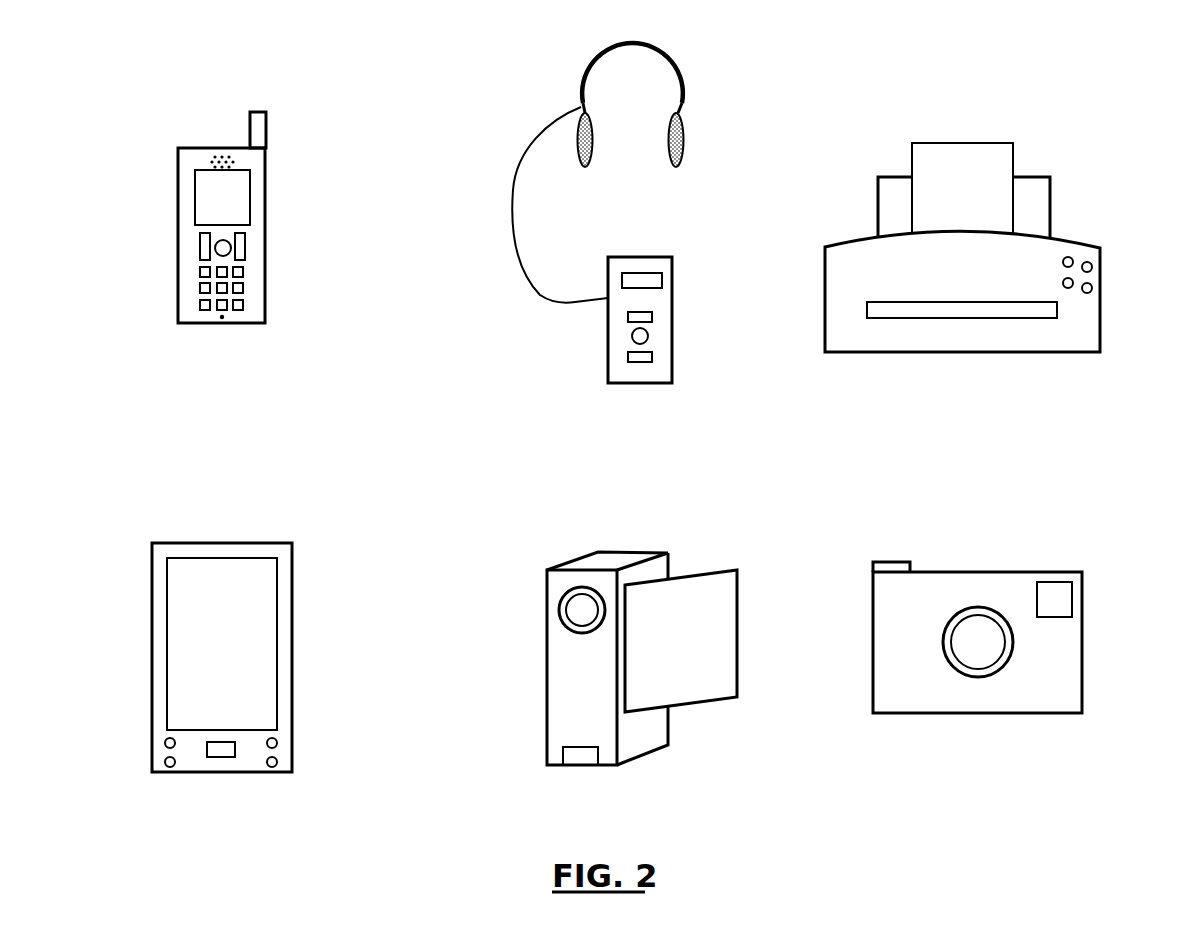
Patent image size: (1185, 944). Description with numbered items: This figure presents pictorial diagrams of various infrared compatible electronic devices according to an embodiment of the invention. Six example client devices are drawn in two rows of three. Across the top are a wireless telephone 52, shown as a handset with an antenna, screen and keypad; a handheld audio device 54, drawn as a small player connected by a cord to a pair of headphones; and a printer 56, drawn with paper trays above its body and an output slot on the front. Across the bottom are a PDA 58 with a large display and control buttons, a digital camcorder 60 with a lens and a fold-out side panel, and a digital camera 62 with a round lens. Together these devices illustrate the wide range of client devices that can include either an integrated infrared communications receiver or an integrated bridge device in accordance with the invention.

The wireless telephone 52 is at (312, 141).
The handheld audio device 54 is at (707, 288).
The printer 56 is at (1125, 300).
The PDA 58 is at (347, 640).
The digital camcorder 60 is at (765, 631).
The digital camera 62 is at (1125, 651).